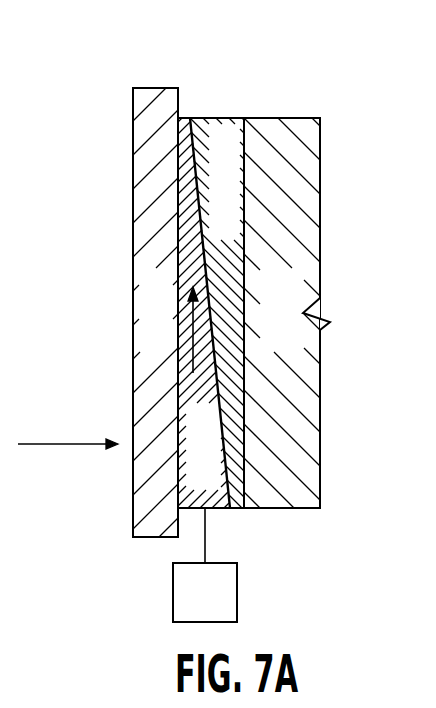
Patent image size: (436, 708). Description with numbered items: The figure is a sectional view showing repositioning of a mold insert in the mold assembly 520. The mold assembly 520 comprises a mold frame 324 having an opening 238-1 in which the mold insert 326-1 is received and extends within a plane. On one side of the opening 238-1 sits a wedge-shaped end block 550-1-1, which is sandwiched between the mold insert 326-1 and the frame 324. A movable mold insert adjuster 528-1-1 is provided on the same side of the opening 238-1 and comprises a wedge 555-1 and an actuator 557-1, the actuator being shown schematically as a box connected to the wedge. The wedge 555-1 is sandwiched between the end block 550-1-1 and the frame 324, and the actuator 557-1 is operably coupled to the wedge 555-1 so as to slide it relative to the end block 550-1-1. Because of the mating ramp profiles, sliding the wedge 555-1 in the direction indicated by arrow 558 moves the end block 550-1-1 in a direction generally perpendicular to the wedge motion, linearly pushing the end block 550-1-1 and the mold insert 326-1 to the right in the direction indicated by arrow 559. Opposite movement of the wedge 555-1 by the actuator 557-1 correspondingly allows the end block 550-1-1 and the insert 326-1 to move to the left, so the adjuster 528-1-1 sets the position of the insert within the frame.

The mold frame 324 is at (133, 208).
The mold assembly 520 is at (367, 83).
The wedge 555-1 is at (220, 503).
The end block 550-1-1 is at (220, 117).
The mold insert 326-1 is at (287, 118).
The opening 238-1 is at (178, 101).
The arrow 558 is at (196, 357).
The arrow 559 is at (68, 445).
The movable mold insert adjuster 528-1-1 is at (238, 592).
The actuator 557-1 is at (173, 588).